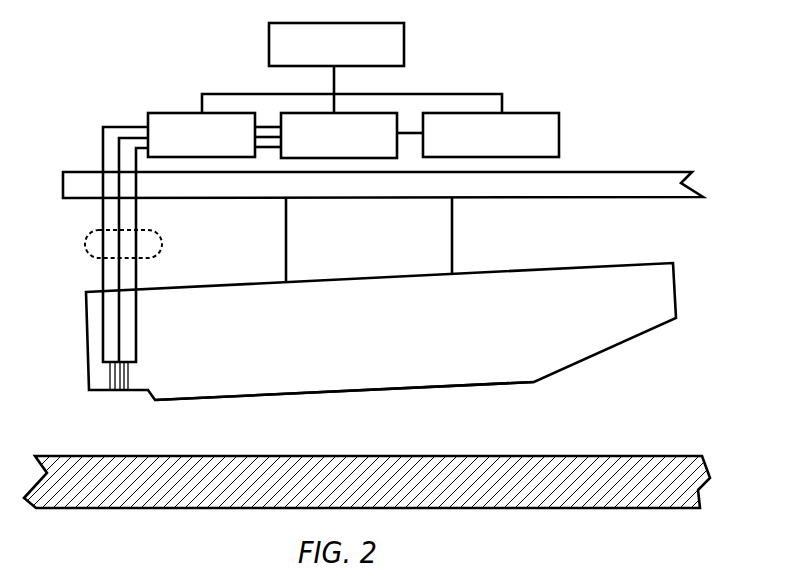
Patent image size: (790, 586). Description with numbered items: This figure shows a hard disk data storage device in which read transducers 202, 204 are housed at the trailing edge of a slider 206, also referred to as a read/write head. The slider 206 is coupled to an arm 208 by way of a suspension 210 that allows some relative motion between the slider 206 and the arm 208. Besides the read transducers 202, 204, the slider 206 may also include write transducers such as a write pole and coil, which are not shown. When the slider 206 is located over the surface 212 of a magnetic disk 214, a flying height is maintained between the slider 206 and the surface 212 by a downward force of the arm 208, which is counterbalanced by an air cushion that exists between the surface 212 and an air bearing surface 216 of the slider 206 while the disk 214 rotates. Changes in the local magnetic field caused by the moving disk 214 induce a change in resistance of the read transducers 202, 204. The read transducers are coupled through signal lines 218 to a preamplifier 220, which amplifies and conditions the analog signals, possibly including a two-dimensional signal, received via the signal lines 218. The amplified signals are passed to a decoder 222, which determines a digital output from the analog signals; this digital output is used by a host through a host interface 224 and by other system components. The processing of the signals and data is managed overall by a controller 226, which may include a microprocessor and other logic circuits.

The read transducer 202 is at (110, 392).
The read transducer 204 is at (121, 392).
The slider 206 is at (577, 273).
The arm 208 is at (623, 178).
The suspension 210 is at (452, 232).
The surface 212 is at (578, 455).
The magnetic disk 214 is at (550, 497).
The air bearing surface 216 is at (402, 386).
The signal lines 218 is at (97, 231).
The preamplifier 220 is at (165, 113).
The decoder 222 is at (308, 113).
The host interface 224 is at (522, 113).
The controller 226 is at (268, 52).